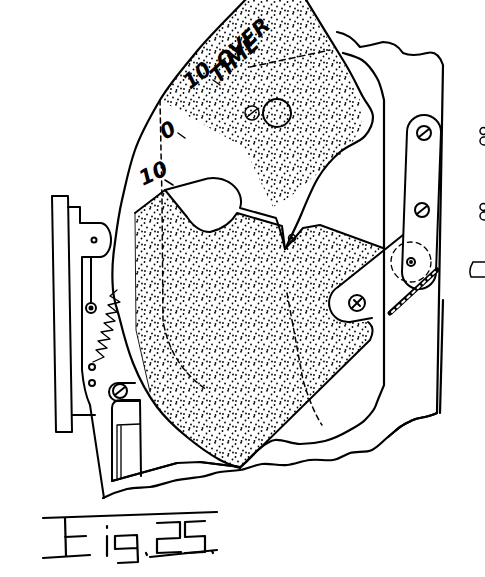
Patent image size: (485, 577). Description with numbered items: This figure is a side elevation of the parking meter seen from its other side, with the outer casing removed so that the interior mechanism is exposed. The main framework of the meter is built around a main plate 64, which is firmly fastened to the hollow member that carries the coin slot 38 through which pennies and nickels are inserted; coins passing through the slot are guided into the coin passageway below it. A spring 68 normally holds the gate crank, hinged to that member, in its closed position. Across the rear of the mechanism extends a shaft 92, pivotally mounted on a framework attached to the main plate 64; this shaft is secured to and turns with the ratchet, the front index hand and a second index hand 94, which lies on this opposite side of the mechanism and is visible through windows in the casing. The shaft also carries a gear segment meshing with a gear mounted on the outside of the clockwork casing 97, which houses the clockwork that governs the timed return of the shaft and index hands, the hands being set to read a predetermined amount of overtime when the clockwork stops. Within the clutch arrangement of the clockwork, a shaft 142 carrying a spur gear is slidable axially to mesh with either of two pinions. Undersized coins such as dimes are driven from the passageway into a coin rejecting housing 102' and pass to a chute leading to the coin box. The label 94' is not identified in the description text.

The coin slot 38 is at (58, 327).
The spring 68 is at (104, 345).
The shaft 142 is at (296, 238).
The shaft 92 is at (414, 259).
The main plate 64 is at (392, 423).
The clockwork casing 97 is at (348, 423).
The second index hand 94 is at (233, 488).
The coin rejecting housing 102' is at (168, 489).
The plate edge 94' is at (459, 391).